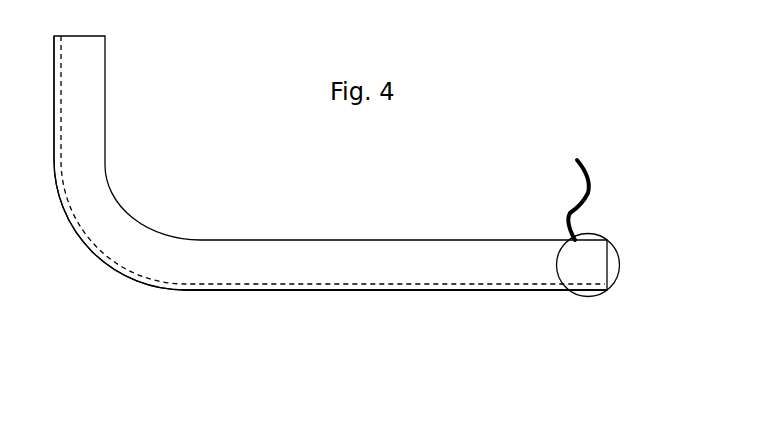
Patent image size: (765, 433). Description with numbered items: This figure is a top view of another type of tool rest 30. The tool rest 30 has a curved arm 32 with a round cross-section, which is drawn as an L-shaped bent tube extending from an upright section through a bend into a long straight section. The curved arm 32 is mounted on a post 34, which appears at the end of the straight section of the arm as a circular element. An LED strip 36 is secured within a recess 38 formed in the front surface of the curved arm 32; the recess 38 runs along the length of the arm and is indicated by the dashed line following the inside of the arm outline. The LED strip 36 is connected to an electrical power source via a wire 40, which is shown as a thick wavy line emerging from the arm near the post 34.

The tool rest 30 is at (153, 198).
The curved arm 32 is at (133, 242).
The post 34 is at (583, 300).
The LED strip 36 is at (252, 291).
The recess 38 is at (345, 283).
The wire 40 is at (588, 175).